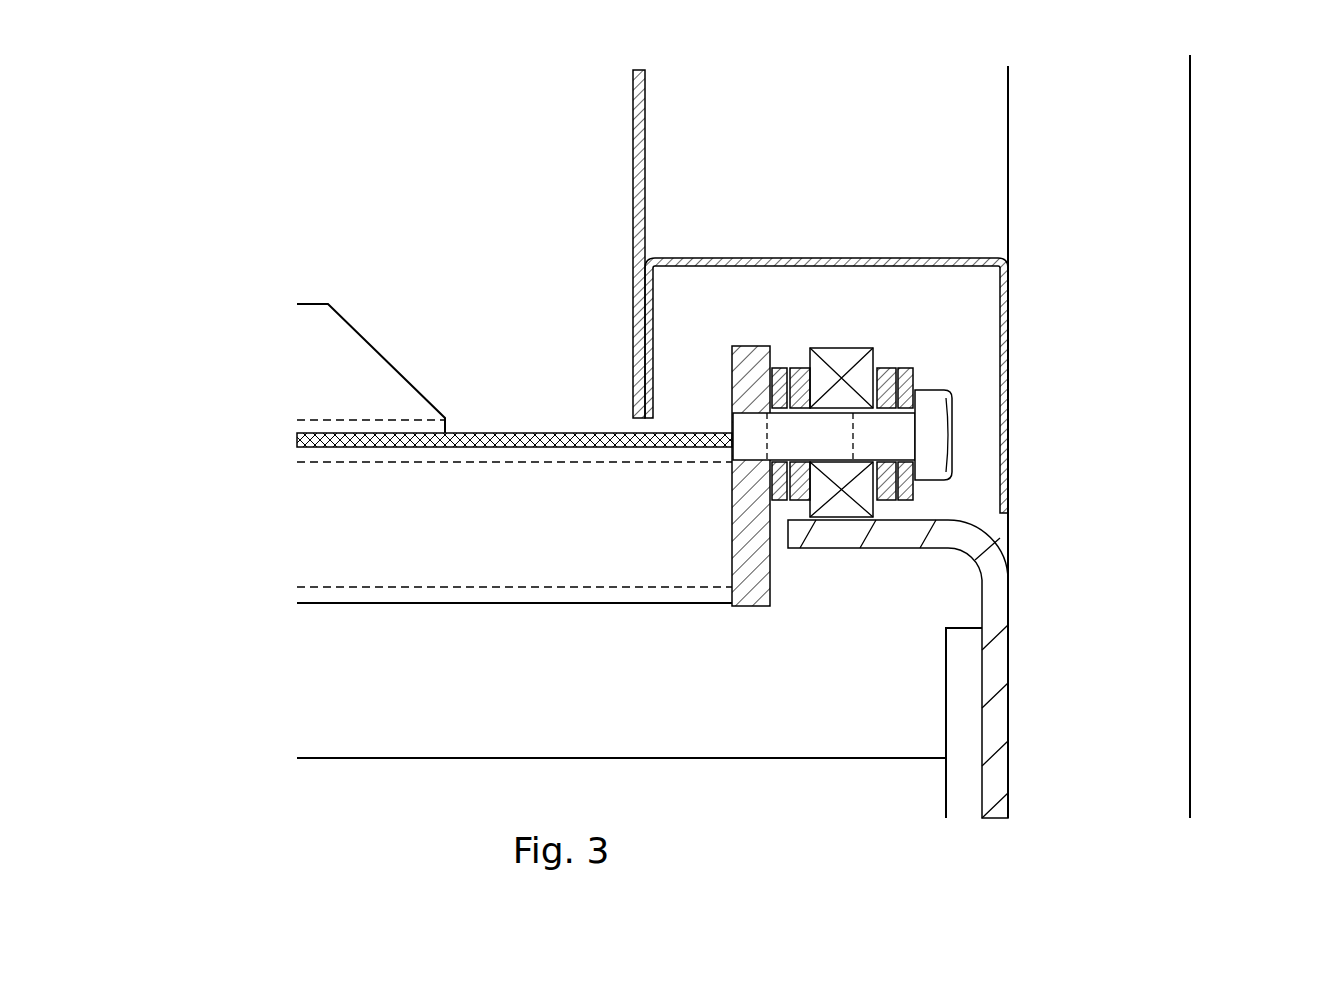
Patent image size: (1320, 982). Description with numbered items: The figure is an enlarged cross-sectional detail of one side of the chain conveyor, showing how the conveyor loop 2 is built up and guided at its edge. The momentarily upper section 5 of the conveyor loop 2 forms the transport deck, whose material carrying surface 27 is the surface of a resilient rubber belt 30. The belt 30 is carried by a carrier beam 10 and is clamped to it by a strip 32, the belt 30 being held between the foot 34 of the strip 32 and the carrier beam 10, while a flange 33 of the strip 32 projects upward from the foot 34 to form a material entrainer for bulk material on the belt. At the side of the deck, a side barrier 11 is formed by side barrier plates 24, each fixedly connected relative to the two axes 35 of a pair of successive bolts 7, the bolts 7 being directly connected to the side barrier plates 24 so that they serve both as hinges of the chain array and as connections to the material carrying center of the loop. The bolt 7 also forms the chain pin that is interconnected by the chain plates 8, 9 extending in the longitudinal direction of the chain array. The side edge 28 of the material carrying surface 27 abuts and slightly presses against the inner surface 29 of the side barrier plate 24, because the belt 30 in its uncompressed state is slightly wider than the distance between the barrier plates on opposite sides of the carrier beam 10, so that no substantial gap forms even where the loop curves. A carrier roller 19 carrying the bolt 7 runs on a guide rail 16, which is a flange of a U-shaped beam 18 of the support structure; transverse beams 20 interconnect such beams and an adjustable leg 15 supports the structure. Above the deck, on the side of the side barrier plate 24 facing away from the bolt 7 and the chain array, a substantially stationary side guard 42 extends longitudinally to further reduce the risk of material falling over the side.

The conveyor loop 2 is at (512, 632).
The upper section 5 is at (485, 430).
The bolt 7 is at (855, 395).
The chain plate 8 is at (800, 368).
The chain plate 9 is at (773, 368).
The carrier beam 10 is at (614, 536).
The side barrier 11 is at (727, 300).
The adjustable leg 15 is at (1192, 665).
The guide rail 16 is at (906, 549).
The U-shaped beam 18 is at (1010, 665).
The roller 19 is at (843, 348).
The transverse beam 20 is at (628, 758).
The side barrier plate 24 is at (780, 513).
The material carrying surface 27 is at (523, 432).
The side edge 28 is at (824, 546).
The surface 29 is at (702, 614).
The rubber belt 30 is at (297, 442).
The strip 32 is at (377, 337).
The flange 33 is at (316, 363).
The foot 34 is at (322, 400).
The axis 35 is at (925, 435).
The side guard 42 is at (633, 347).